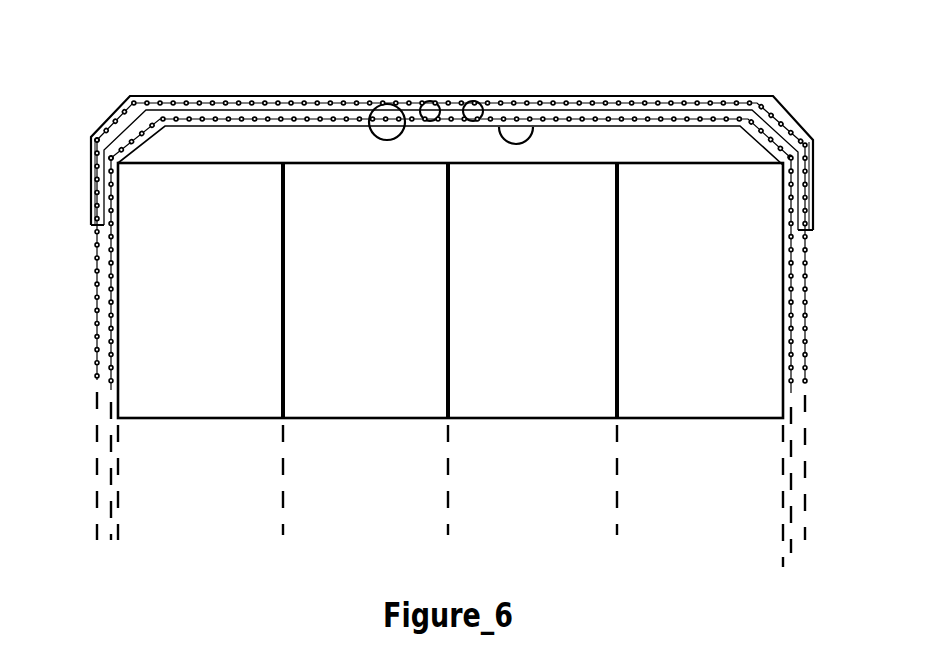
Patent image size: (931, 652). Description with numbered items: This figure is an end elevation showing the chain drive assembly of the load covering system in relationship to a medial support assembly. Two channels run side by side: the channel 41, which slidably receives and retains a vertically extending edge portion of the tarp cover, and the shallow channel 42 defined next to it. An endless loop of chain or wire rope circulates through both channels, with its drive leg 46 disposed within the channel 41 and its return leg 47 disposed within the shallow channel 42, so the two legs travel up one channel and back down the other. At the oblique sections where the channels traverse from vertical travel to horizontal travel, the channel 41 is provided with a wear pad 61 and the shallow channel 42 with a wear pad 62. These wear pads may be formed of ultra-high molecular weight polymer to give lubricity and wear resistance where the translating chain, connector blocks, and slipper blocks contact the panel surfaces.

The channel 41 is at (112, 123).
The shallow channel 42 is at (118, 217).
The drive leg 46 is at (97, 257).
The return leg 47 is at (110, 327).
The wear pad 61 is at (138, 110).
The wear pad 62 is at (133, 155).